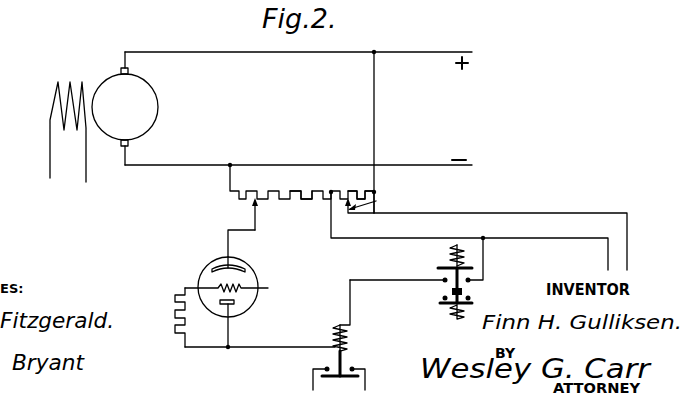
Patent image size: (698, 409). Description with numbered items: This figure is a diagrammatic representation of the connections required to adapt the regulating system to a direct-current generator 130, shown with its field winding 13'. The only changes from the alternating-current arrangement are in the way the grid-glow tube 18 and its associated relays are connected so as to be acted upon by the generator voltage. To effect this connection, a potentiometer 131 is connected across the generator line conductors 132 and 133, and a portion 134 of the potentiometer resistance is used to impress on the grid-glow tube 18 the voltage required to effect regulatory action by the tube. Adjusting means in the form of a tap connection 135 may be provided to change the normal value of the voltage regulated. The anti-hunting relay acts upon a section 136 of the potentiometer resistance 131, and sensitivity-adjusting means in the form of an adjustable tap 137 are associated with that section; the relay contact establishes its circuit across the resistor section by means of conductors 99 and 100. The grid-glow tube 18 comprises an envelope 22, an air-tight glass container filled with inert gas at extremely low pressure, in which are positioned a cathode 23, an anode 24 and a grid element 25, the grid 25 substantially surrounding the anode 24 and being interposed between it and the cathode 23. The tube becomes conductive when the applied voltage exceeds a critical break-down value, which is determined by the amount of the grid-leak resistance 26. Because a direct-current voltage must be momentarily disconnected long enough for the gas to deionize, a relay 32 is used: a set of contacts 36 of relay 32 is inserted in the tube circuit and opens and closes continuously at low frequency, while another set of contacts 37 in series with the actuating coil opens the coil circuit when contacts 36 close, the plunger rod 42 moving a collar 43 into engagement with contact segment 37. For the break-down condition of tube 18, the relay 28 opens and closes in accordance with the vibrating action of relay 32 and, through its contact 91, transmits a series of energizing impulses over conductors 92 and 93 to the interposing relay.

The field winding 13' is at (50, 132).
The direct-current generator 130 is at (208, 116).
The generator line conductor 132 is at (322, 53).
The generator line conductor 133 is at (287, 165).
The potentiometer 131 is at (304, 190).
The section of the potentiometer resistance 136 is at (366, 192).
The portion of the potentiometer resistance 134 is at (304, 201).
The tap connection 135 is at (252, 210).
The adjustable tap 137 is at (378, 201).
The conductor 100 is at (551, 201).
The conductor 99 is at (563, 233).
The grid-glow tube 18 is at (228, 295).
The envelope 22 is at (199, 279).
The cathode 23 is at (248, 268).
The grid element 25 is at (262, 289).
The anode 24 is at (234, 303).
The grid-leak resistance 26 is at (173, 313).
The contacts of relay 32 36 is at (441, 268).
The relay 32 is at (430, 285).
The contacts of relay 32 37 is at (448, 307).
The plunger rod 42 is at (474, 285).
The collar 43 is at (472, 299).
The relay 28 is at (388, 331).
The contact of relay 28 91 is at (352, 380).
The conductor 92 is at (367, 384).
The conductor 93 is at (312, 379).